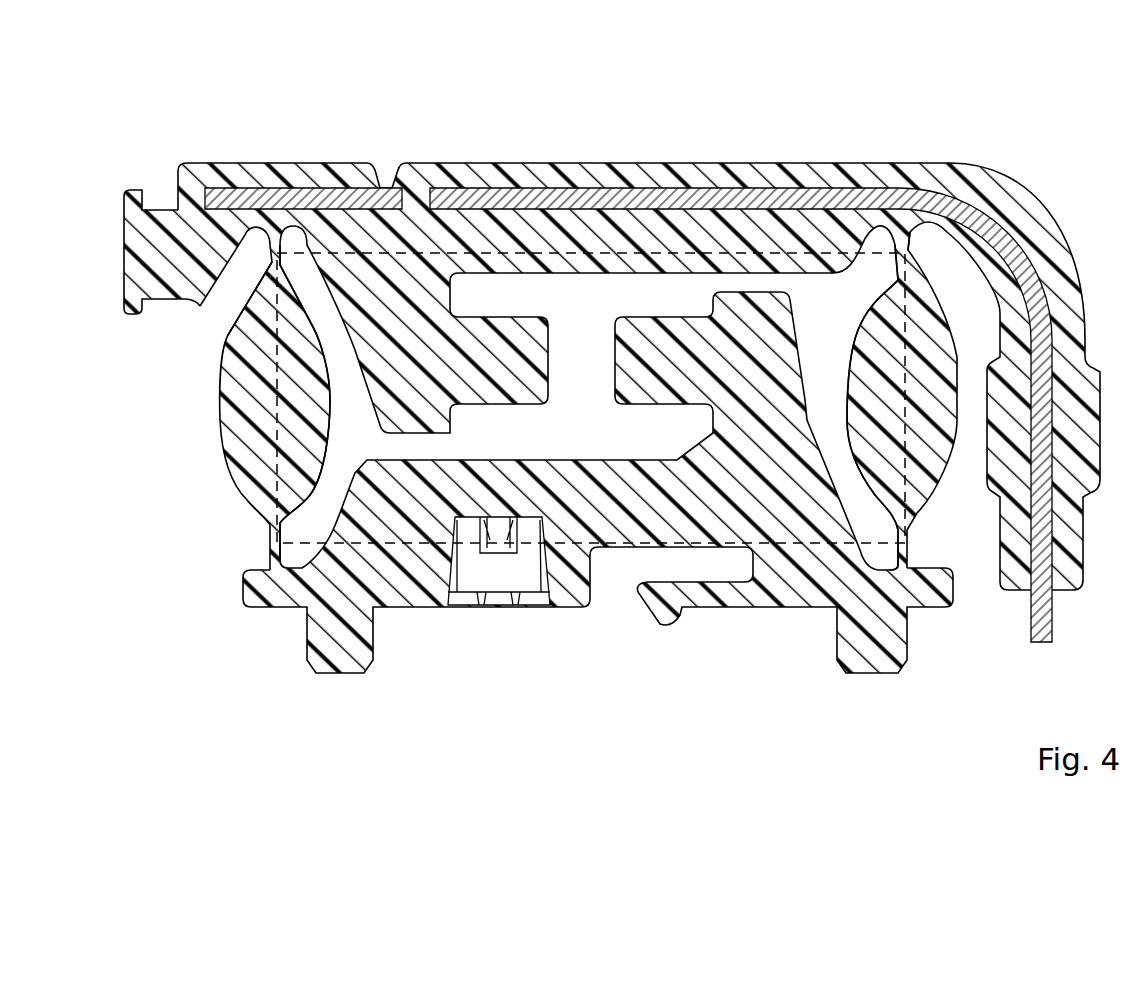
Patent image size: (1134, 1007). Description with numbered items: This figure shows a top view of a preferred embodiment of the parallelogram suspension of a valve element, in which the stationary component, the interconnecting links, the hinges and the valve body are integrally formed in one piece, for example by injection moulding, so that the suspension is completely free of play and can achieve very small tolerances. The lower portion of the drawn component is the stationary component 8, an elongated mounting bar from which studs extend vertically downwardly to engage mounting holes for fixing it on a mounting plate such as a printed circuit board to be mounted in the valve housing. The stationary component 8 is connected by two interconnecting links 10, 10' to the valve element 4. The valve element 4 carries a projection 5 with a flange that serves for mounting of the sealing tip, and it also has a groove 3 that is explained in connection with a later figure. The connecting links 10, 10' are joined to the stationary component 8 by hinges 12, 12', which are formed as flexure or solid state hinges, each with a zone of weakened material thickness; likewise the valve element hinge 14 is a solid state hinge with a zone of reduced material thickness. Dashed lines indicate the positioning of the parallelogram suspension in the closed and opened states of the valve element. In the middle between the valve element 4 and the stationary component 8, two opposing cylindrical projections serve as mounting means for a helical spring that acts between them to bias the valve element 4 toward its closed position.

The groove 3 is at (371, 176).
The valve element 4 is at (544, 156).
The projection 5 is at (127, 287).
The stationary component 8 is at (397, 608).
The interconnecting link 10 is at (217, 385).
The interconnecting link 10' is at (921, 381).
The hinge 12 is at (228, 547).
The hinge 12' is at (936, 538).
The valve element hinge 14 is at (266, 252).